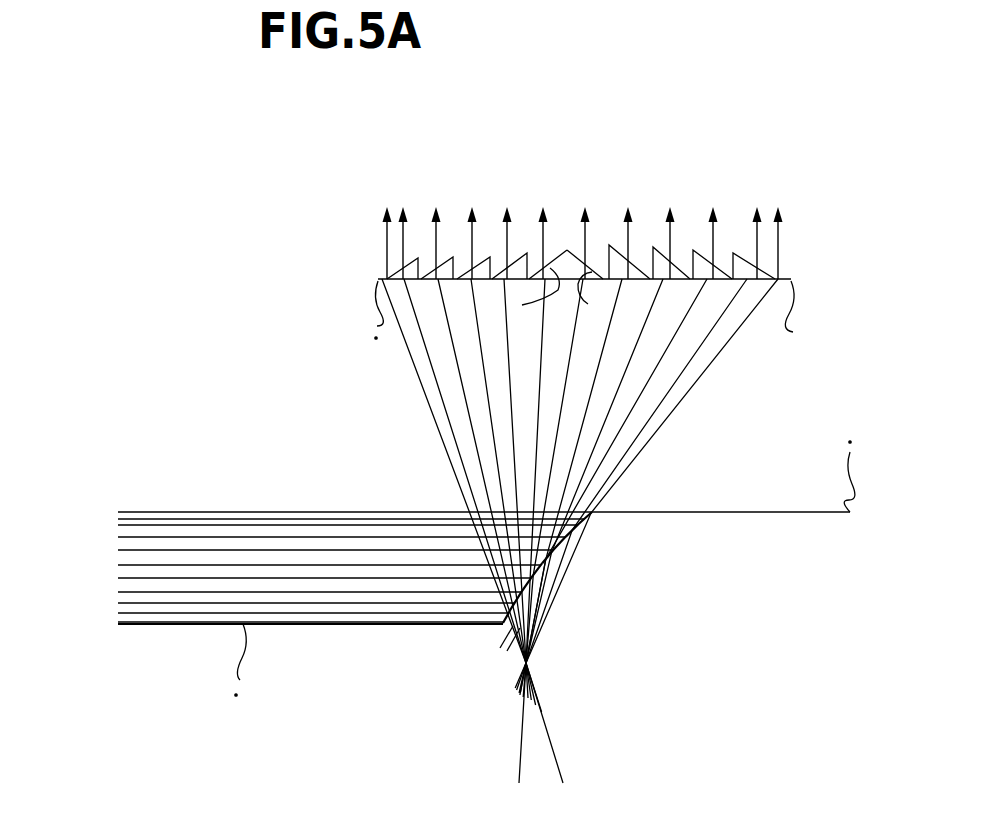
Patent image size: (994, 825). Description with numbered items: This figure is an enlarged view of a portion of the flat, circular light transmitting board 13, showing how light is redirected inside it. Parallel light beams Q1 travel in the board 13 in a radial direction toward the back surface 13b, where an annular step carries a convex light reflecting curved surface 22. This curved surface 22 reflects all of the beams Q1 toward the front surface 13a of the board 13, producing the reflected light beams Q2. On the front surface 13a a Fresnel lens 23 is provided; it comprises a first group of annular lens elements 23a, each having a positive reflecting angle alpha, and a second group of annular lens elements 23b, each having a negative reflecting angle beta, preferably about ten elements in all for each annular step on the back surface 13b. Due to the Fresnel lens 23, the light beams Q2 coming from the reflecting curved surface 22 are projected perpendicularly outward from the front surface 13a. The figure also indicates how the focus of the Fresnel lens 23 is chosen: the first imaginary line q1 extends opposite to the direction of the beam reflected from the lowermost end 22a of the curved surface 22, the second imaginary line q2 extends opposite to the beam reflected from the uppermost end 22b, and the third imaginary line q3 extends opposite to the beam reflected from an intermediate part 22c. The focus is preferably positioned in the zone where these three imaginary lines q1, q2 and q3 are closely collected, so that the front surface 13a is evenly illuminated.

The circular light transmitting board 13 is at (623, 340).
The front surface of the board 13a is at (660, 268).
The back surface of the board 13b is at (793, 513).
The light reflecting curved surface 22 is at (410, 661).
The lowermost end of the light reflecting curved surface 22a is at (493, 627).
The uppermost end of the light reflecting curved surface 22b is at (592, 514).
The intermediate part of the light reflecting curved surface 22c is at (548, 563).
The Fresnel lens 23 is at (600, 185).
The annular lens elements of the first group 23a is at (412, 258).
The annular lens elements of the second group 23b is at (588, 266).
The parallel light beams Q1 is at (255, 543).
The reflected light beams Q2 is at (571, 531).
The first imaginary line q1 is at (552, 742).
The second imaginary line q2 is at (475, 650).
The third imaginary line q3 is at (520, 749).